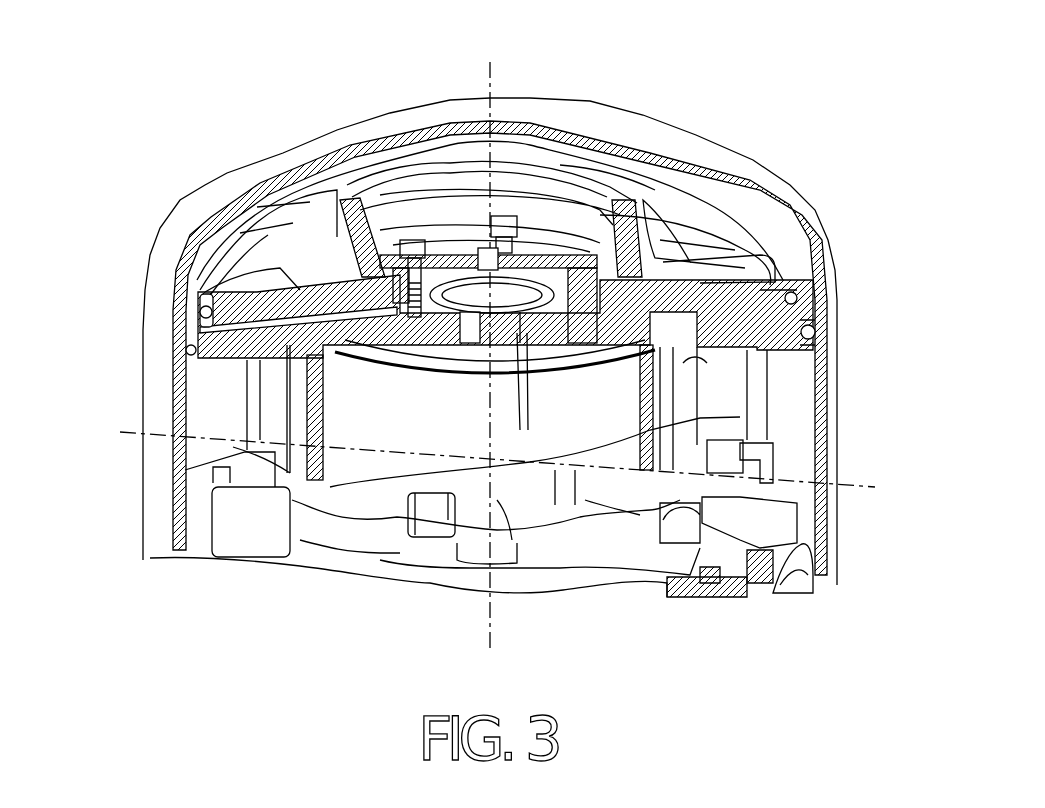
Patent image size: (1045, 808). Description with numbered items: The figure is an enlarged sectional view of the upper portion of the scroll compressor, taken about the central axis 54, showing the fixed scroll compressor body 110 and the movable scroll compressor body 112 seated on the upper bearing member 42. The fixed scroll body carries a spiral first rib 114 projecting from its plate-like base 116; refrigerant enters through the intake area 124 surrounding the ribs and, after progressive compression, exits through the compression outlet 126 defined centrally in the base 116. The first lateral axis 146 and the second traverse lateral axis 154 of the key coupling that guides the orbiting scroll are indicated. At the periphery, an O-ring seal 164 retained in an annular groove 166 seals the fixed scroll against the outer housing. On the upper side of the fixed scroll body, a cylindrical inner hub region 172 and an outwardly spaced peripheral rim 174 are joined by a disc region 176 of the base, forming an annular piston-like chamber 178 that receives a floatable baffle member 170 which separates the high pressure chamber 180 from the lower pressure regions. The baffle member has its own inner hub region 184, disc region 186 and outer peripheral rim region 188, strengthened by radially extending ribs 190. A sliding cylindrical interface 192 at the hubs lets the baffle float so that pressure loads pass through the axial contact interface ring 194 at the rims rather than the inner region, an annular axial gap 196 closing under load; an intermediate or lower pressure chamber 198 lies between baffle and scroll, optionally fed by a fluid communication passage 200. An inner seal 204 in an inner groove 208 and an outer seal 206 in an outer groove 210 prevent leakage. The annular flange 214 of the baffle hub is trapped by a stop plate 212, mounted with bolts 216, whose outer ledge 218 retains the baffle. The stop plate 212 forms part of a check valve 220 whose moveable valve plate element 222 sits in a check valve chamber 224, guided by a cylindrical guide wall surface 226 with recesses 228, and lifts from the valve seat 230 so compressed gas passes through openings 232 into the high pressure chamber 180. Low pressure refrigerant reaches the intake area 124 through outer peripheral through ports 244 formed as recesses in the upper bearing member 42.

The upper bearing member 42 is at (773, 503).
The central axis 54 is at (488, 76).
The fixed scroll compressor body 110 is at (267, 400).
The movable scroll compressor body 112 is at (520, 340).
The first rib 114 is at (253, 430).
The base 116 is at (178, 367).
The intake area 124 is at (697, 412).
The compression outlet 126 is at (470, 335).
The first lateral axis 146 is at (380, 588).
The second traverse lateral axis 154 is at (150, 433).
The O-ring seal 164 is at (825, 345).
The annular groove 166 is at (830, 345).
The baffle member 170 is at (292, 210).
The inner hub region 172 is at (317, 513).
The peripheral rim 174 is at (177, 300).
The disc region 176 is at (290, 355).
The annular piston-like chamber 178 is at (790, 315).
The high pressure chamber 180 is at (616, 180).
The inner hub region 184 is at (350, 202).
The disc region 186 is at (262, 252).
The outer peripheral rim region 188 is at (207, 290).
The radially extending ribs 190 is at (735, 262).
The sliding cylindrical interface 192 is at (543, 335).
The axial contact interface ring 194 is at (170, 327).
The annular axial gap 196 is at (645, 540).
The intermediate or lower pressure chamber 198 is at (275, 440).
The fluid communication passage 200 is at (783, 245).
The inner seal 204 is at (460, 250).
The outer seal 206 is at (790, 300).
The inner groove 208 is at (382, 237).
The outer groove 210 is at (782, 290).
The stop plate 212 is at (562, 258).
The annular flange 214 is at (712, 237).
The bolts 216 is at (416, 240).
The outer ledge 218 is at (688, 215).
The check valve 220 is at (423, 335).
The moveable valve plate element 222 is at (450, 333).
The check valve chamber 224 is at (474, 255).
The cylindrical guide wall surface 226 is at (594, 215).
The recesses 228 is at (645, 190).
The valve seat 230 is at (530, 335).
The openings 232 is at (570, 190).
The outer peripheral through ports 244 is at (812, 558).